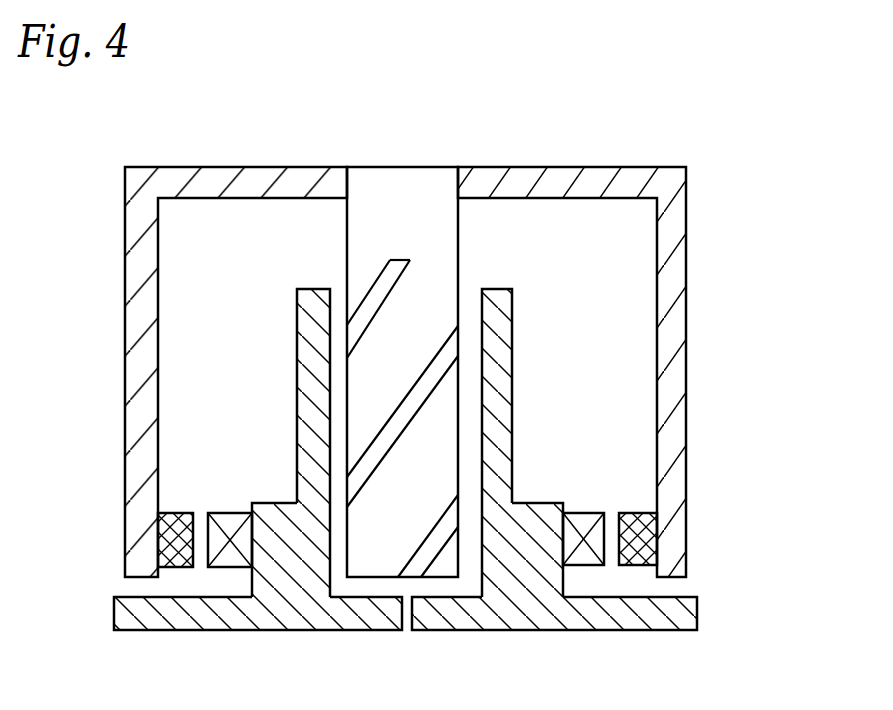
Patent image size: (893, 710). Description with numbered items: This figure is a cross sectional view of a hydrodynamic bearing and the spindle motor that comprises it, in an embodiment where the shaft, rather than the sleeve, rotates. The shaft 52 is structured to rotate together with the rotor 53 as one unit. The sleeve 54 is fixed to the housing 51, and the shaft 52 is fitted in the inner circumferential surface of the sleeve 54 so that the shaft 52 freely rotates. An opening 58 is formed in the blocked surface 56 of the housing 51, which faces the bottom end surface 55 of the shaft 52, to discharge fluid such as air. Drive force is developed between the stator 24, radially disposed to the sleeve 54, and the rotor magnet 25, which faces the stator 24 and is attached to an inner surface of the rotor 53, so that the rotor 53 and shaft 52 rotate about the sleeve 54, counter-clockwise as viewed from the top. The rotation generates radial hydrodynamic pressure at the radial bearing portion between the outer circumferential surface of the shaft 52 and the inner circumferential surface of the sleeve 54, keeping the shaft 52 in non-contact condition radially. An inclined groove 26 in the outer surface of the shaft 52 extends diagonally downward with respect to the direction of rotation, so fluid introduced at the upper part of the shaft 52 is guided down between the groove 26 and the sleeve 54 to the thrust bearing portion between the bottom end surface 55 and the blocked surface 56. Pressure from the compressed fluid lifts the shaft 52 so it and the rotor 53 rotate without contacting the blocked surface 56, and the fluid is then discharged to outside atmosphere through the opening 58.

The stator 24 is at (587, 522).
The rotor magnet 25 is at (650, 535).
The inclined groove 26 is at (412, 424).
The housing 51 is at (263, 608).
The shaft 52 is at (400, 193).
The rotor 53 is at (527, 183).
The sleeve 54 is at (497, 381).
The bottom end surface 55 is at (378, 578).
The blocked surface 56 is at (452, 597).
The opening 58 is at (409, 632).